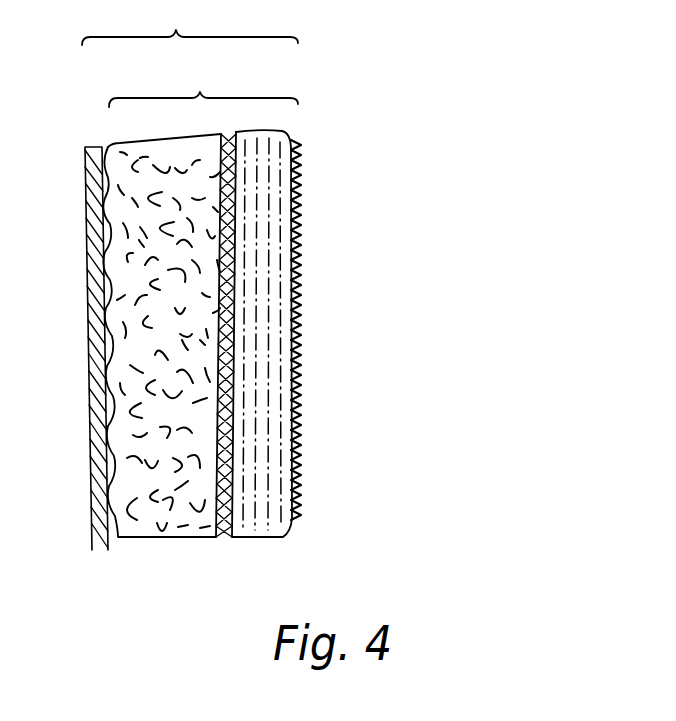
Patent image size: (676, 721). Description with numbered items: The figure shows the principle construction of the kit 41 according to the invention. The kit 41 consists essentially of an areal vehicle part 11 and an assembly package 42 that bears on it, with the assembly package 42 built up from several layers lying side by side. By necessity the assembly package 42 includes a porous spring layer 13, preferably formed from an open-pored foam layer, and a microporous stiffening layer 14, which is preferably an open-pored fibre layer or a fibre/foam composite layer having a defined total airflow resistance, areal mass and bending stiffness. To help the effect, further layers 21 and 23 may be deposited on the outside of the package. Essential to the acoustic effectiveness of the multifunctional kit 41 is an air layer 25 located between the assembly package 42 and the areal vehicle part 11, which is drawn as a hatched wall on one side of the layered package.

The areal vehicle part 11 is at (102, 433).
The porous spring layer 13 is at (160, 527).
The microporous stiffening layer 14 is at (220, 527).
The further layer 21 is at (270, 527).
The further layer 23 is at (298, 363).
The air layer 25 is at (108, 540).
The kit 41 is at (190, 22).
The assembly package 42 is at (203, 80).